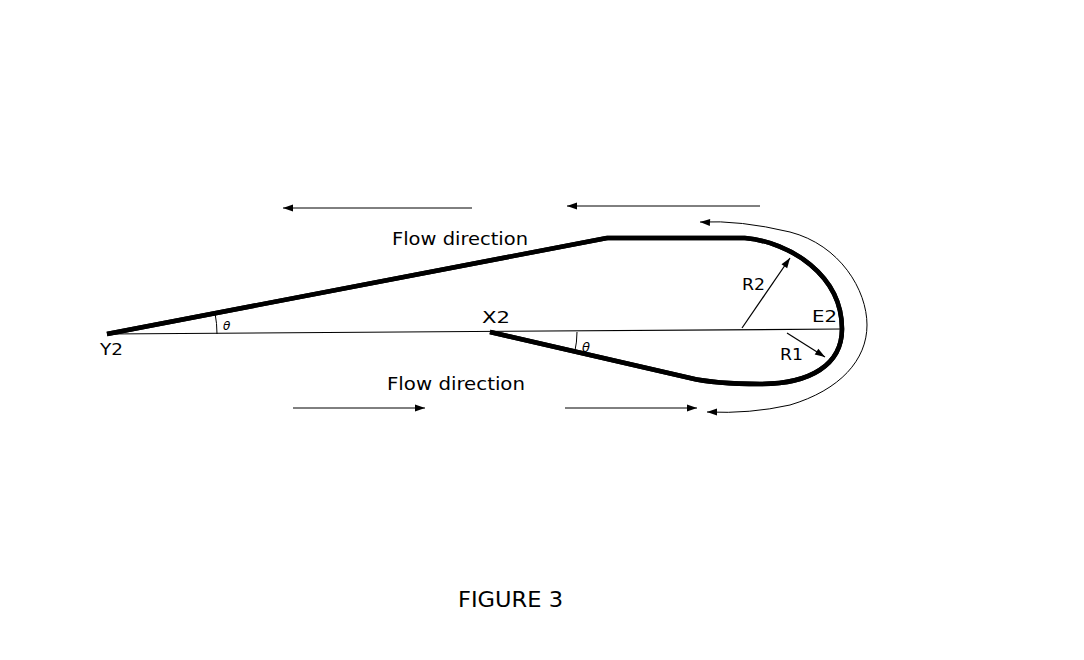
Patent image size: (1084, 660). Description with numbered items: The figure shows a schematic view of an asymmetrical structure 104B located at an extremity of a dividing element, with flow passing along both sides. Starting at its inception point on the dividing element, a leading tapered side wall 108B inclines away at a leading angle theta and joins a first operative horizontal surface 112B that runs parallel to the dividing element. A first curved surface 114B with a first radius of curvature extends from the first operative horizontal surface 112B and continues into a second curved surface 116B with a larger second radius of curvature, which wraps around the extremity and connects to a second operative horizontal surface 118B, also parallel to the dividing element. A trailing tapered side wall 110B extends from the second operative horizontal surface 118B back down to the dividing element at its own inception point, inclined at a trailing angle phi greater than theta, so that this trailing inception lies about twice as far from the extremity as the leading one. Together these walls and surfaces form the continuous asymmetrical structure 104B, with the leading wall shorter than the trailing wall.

The asymmetrical structure 104B is at (757, 122).
The leading tapered side wall 108B is at (788, 449).
The trailing tapered side wall 110B is at (340, 287).
The first operative horizontal surface 112B is at (762, 385).
The first curved surface 114B is at (828, 373).
The second curved surface 116B is at (827, 277).
The second operative horizontal surface 118B is at (668, 233).